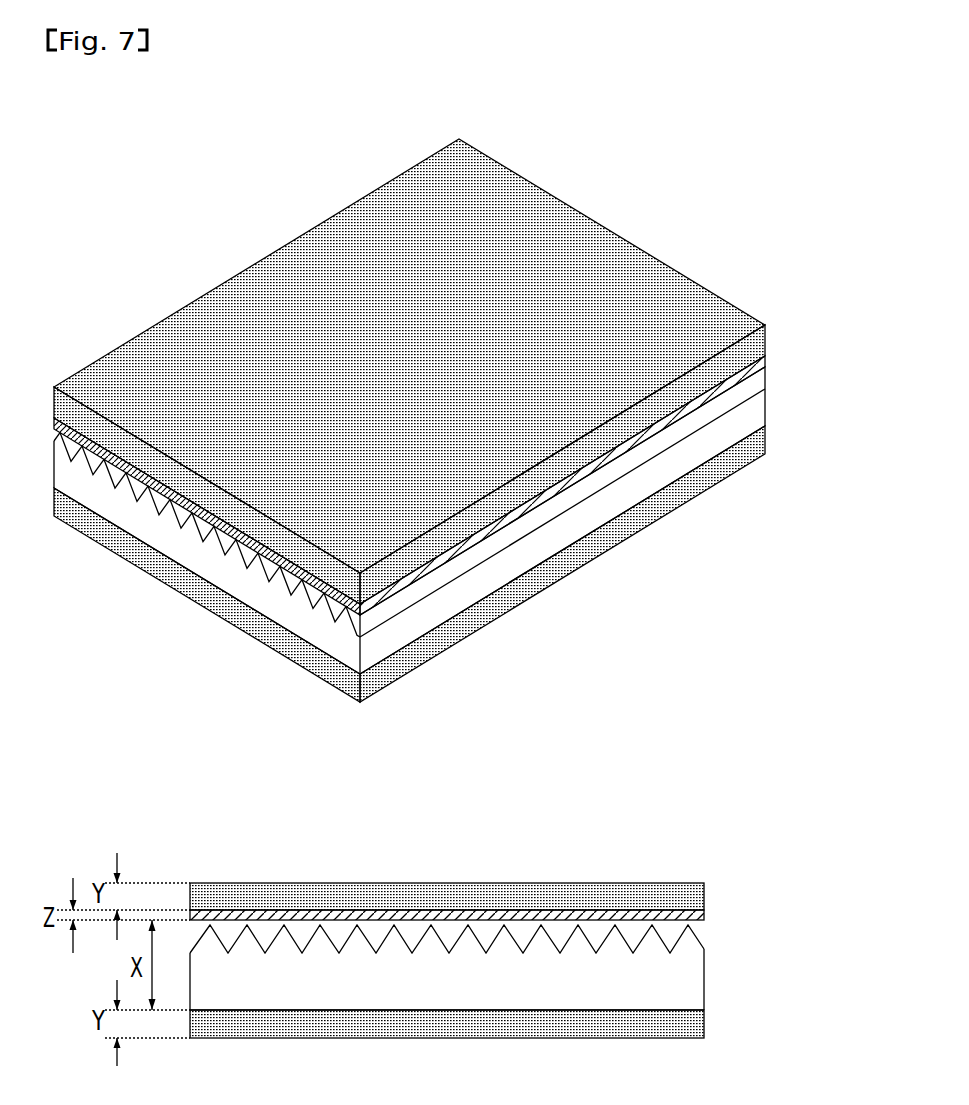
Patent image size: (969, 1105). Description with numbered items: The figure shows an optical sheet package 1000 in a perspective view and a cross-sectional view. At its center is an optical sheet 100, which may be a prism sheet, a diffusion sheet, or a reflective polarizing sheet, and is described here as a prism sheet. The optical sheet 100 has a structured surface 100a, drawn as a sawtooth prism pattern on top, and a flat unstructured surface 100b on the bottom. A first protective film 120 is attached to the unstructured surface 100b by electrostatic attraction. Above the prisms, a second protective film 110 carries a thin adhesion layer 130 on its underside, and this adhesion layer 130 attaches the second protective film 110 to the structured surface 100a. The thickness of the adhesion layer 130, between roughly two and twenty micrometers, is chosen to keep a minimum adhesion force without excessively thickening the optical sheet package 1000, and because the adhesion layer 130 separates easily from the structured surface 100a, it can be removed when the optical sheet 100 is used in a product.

The optical sheet package 1000 is at (131, 155).
The second protective film 110 is at (765, 333).
The adhesion layer 130 is at (765, 362).
The optical sheet 100 is at (753, 408).
The structured surface 100a is at (190, 513).
The unstructured surface 100b is at (203, 577).
The first protective film 120 is at (765, 437).